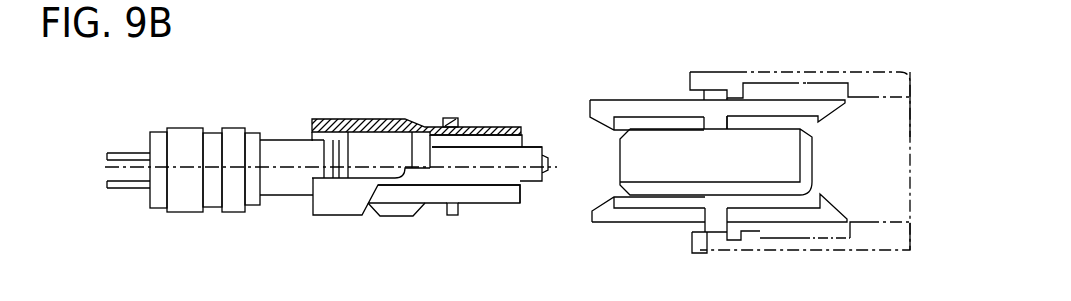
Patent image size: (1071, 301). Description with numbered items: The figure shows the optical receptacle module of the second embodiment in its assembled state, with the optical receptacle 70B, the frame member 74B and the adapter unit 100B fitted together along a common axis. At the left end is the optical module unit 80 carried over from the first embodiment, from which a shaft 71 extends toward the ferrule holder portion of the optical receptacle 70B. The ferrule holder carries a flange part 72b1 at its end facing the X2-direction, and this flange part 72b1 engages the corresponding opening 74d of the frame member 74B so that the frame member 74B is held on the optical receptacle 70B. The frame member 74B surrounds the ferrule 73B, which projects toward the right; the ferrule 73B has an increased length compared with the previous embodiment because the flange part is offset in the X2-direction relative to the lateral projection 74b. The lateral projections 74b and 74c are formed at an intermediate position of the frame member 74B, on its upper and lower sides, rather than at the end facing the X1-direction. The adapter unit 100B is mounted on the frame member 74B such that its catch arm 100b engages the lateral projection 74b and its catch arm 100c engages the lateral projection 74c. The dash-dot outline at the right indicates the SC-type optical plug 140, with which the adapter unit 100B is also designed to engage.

The optical module unit 80 is at (183, 125).
The shaft 71 is at (285, 138).
The optical receptacle 70B is at (434, 164).
The opening 74d is at (347, 140).
The flange part 72b1 is at (345, 140).
The lateral projection 74b is at (450, 118).
The frame member 74B is at (485, 127).
The ferrule 73B is at (528, 147).
The lateral projection 74c is at (453, 216).
The adapter unit 100B is at (723, 154).
The catch arm 100b is at (628, 98).
The catch arm 100c is at (638, 225).
The optical plug 140 is at (807, 70).